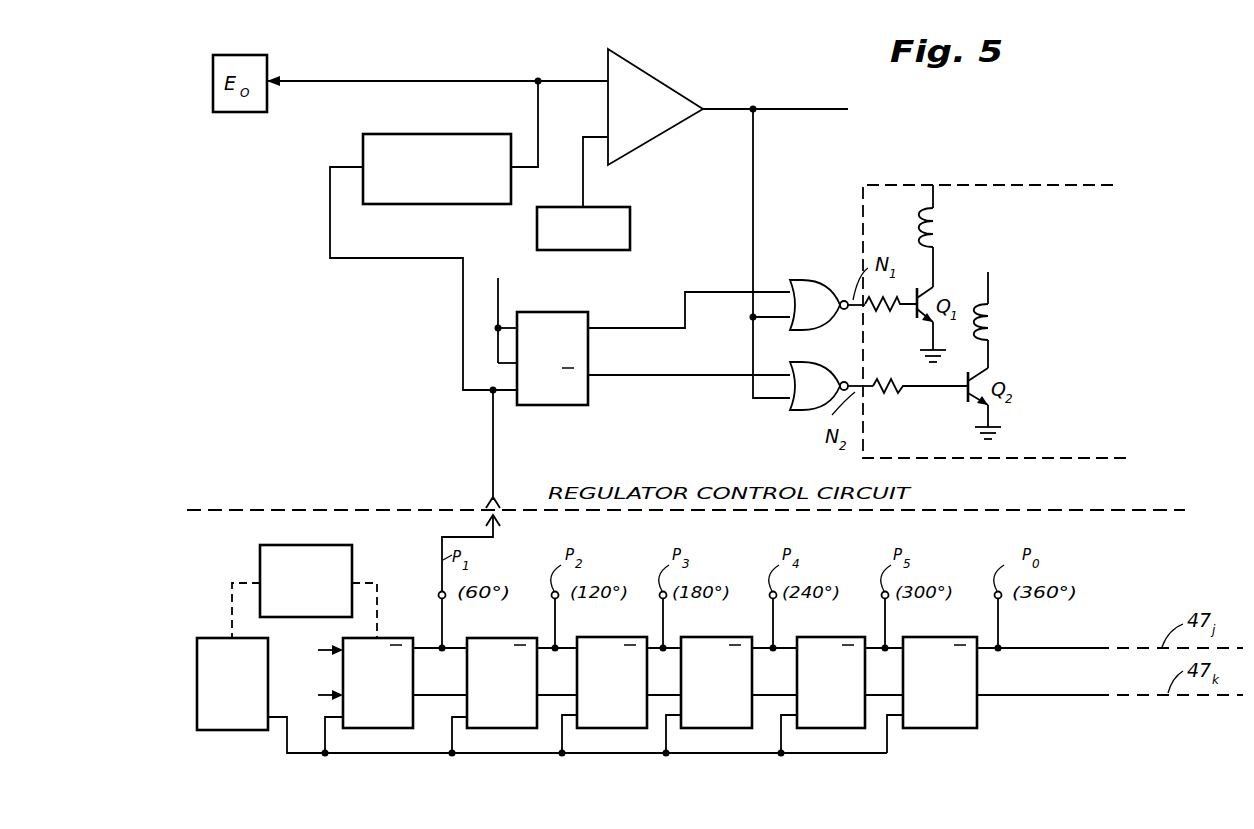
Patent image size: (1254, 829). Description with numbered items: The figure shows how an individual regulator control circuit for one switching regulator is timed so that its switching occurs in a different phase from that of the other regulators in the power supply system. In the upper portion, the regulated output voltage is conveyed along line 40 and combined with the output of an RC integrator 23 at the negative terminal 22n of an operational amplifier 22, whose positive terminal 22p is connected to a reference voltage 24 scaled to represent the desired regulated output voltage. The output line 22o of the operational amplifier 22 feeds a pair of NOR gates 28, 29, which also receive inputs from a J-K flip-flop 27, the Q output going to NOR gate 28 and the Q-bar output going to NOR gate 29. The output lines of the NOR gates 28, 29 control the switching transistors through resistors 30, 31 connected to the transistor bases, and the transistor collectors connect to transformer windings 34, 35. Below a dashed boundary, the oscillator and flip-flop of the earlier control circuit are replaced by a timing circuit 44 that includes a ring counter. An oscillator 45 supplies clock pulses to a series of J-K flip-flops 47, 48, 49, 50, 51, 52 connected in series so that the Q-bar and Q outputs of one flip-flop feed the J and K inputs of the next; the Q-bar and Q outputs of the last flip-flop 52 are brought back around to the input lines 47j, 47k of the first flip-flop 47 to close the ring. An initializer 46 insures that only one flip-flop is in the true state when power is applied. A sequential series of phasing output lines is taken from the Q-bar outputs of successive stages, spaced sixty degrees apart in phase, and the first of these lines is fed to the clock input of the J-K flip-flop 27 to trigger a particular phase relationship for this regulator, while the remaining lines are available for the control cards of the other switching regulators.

The operational amplifier 22 is at (668, 91).
The negative terminal of operational amplifier 22n is at (600, 80).
The positive terminal of operational amplifier 22p is at (607, 146).
The output line of operational amplifier 22o is at (757, 156).
The RC integrator 23 is at (487, 141).
The reference voltage 24 is at (630, 224).
The J-K flip-flop 27 is at (567, 312).
The NOR gate 28 is at (813, 290).
The NOR gate 29 is at (835, 358).
The resistor 30 is at (887, 296).
The resistor 31 is at (888, 373).
The transformer winding 34 is at (942, 224).
The transformer winding 35 is at (998, 331).
The line conveying regulated output voltage 40 is at (405, 78).
The timing circuit 44 is at (528, 768).
The oscillator 45 is at (199, 702).
The initializer 46 is at (340, 550).
The J-K flip-flop 47 is at (390, 636).
The J input line of flip-flop 47 47j is at (313, 654).
The K input line of flip-flop 47 47k is at (313, 699).
The J-K flip-flop 48 is at (508, 636).
The J-K flip-flop 49 is at (610, 636).
The J-K flip-flop 50 is at (713, 636).
The J-K flip-flop 51 is at (825, 636).
The J-K flip-flop 52 is at (930, 637).